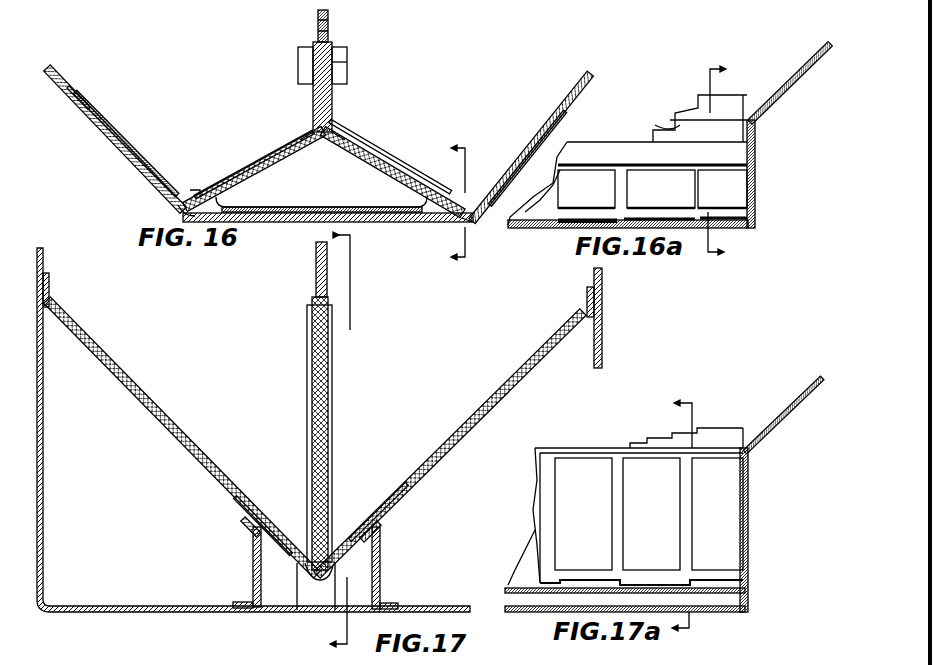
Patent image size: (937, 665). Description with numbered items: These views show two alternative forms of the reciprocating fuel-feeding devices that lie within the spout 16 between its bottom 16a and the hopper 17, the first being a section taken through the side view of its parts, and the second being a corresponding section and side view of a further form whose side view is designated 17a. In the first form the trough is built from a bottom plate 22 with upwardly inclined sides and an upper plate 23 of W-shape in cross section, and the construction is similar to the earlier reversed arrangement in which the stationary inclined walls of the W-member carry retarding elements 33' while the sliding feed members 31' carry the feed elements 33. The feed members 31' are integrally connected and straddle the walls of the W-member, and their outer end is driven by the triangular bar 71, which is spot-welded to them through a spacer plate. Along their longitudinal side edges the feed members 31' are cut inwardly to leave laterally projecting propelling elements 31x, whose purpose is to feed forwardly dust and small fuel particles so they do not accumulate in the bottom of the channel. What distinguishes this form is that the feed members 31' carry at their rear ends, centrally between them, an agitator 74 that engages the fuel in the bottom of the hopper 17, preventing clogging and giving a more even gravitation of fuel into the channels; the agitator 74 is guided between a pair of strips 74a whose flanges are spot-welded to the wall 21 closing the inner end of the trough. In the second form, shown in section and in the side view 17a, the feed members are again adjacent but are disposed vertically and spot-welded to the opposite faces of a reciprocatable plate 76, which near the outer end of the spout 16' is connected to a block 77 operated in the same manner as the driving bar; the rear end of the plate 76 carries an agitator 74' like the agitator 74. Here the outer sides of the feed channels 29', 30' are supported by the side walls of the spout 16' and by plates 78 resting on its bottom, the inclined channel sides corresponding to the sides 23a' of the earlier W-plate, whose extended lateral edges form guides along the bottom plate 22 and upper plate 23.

In FIG. 16a, the spout 16 is at (730, 164).
In FIG. 16, the bottom of the spout 16a is at (442, 204).
In FIG. 17a, the hopper 17 is at (672, 525).
In FIG. 17, the section line of FIG. 17a is at (320, 442).
In FIG. 16a, the wall 21 is at (755, 180).
In FIG. 16, the bottom plate 22 is at (122, 158).
In FIG. 16, the upper plate 23 is at (158, 198).
In FIG. 17, the inclined panel plate 23a' is at (325, 505).
In FIG. 17, the feed channel 29' is at (182, 437).
In FIG. 17, the feed channel 30' is at (450, 443).
In FIG. 16, the feed members 31' is at (324, 172).
In FIG. 16a, the feed members 31' is at (627, 183).
In FIG. 16a, the propelling elements 31x is at (563, 226).
In FIG. 16, the feed elements 33 is at (321, 159).
In FIG. 16, the retarding elements 33' is at (123, 141).
In FIG. 16, the triangular bar 71 is at (397, 182).
In FIG. 16, the agitator 74 is at (334, 75).
In FIG. 16a, the agitator 74 is at (700, 111).
In FIG. 16, the strips 74a is at (346, 61).
In FIG. 16a, the strips 74a is at (680, 126).
In FIG. 17a, the agitator 74' is at (674, 428).
In FIG. 17, the reciprocatable plate 76 is at (330, 470).
In FIG. 17, the block 77 is at (304, 583).
In FIG. 17, the plates 78 is at (253, 560).
In FIG. 17, the spout 16' is at (400, 461).